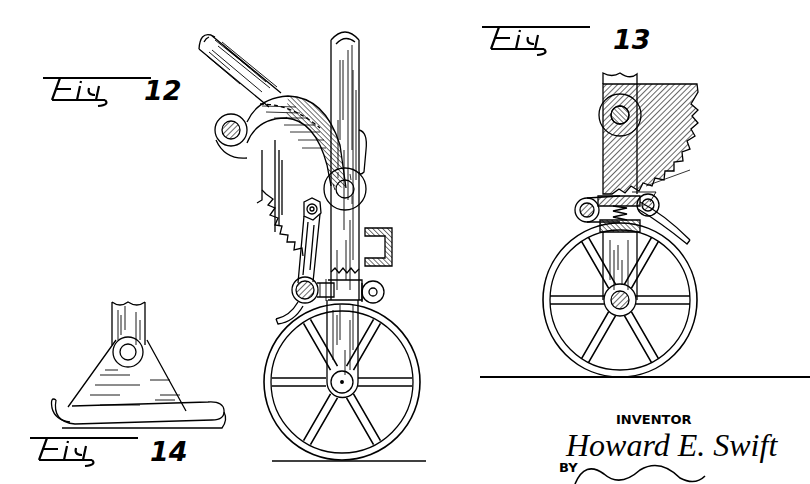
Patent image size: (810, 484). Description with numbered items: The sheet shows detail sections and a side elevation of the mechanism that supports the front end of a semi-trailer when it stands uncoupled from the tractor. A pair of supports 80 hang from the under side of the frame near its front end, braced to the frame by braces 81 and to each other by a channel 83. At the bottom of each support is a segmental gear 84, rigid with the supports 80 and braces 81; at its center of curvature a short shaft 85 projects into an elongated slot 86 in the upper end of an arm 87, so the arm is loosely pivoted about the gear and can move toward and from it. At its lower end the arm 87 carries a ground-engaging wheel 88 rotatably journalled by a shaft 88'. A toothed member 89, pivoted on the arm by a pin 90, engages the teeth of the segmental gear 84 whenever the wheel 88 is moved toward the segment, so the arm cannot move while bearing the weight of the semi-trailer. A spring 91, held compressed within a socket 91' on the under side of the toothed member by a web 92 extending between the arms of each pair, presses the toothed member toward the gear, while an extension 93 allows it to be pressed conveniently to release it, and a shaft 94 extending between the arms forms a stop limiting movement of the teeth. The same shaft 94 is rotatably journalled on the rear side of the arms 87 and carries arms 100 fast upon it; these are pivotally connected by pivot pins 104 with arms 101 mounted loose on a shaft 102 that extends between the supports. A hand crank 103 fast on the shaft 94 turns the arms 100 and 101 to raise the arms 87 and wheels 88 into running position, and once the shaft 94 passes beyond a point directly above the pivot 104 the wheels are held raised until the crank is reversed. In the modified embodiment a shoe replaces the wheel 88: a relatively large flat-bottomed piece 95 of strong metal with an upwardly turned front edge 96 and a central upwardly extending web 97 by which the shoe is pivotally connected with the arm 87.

In FIG. 12, the support 80 is at (345, 70).
In FIG. 12, the brace 81 is at (222, 62).
In FIG. 12, the channel 83 is at (390, 232).
In FIG. 12, the segmental gear 84 is at (275, 230).
In FIG. 13, the segmental gear 84 is at (698, 138).
In FIG. 12, the short shaft 85 is at (354, 189).
In FIG. 13, the short shaft 85 is at (612, 110).
In FIG. 12, the elongated slot 86 is at (352, 176).
In FIG. 13, the elongated slot 86 is at (604, 126).
In FIG. 12, the arm 87 is at (345, 350).
In FIG. 13, the arm 87 is at (625, 262).
In FIG. 14, the arm 87 is at (130, 310).
In FIG. 12, the wheel 88 is at (360, 382).
In FIG. 13, the wheel 88 is at (645, 300).
In FIG. 12, the shaft 88' is at (317, 369).
In FIG. 13, the shaft 88' is at (578, 287).
In FIG. 14, the shaft 88' is at (154, 339).
In FIG. 12, the toothed member 89 is at (345, 288).
In FIG. 13, the toothed member 89 is at (668, 188).
In FIG. 12, the pin 90 is at (384, 292).
In FIG. 13, the pin 90 is at (580, 205).
In FIG. 13, the spring 91 is at (600, 218).
In FIG. 13, the socket 91' is at (669, 192).
In FIG. 13, the web 92 is at (620, 224).
In FIG. 12, the extension 93 is at (276, 320).
In FIG. 13, the extension 93 is at (688, 236).
In FIG. 12, the shaft 94 is at (292, 290).
In FIG. 13, the shaft 94 is at (660, 207).
In FIG. 14, the flat-bottomed piece 95 is at (172, 425).
In FIG. 14, the upwardly turned front edge 96 is at (57, 400).
In FIG. 14, the upwardly extending web 97 is at (150, 384).
In FIG. 12, the arm 100 is at (306, 252).
In FIG. 12, the arm 101 is at (285, 100).
In FIG. 12, the shaft 102 is at (215, 130).
In FIG. 12, the hand crank 103 is at (367, 140).
In FIG. 12, the pivot pin 104 is at (306, 207).